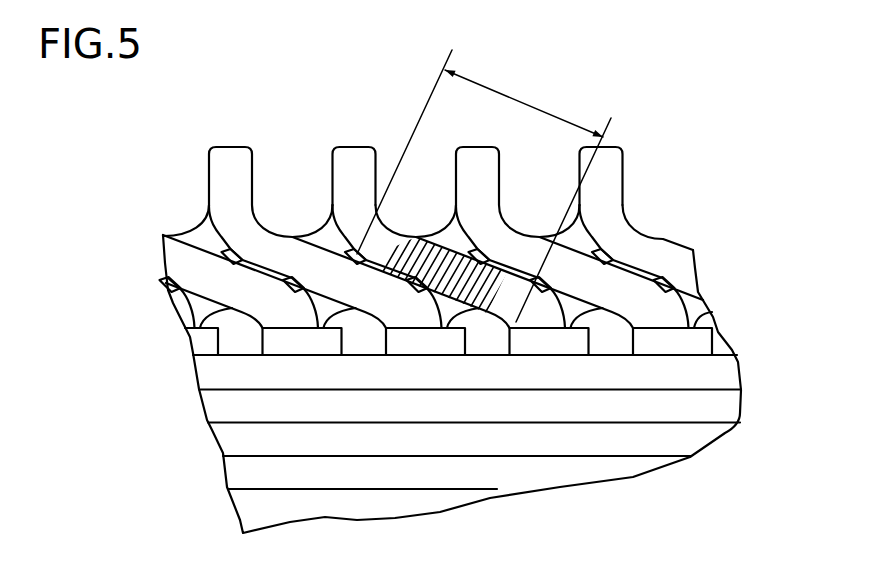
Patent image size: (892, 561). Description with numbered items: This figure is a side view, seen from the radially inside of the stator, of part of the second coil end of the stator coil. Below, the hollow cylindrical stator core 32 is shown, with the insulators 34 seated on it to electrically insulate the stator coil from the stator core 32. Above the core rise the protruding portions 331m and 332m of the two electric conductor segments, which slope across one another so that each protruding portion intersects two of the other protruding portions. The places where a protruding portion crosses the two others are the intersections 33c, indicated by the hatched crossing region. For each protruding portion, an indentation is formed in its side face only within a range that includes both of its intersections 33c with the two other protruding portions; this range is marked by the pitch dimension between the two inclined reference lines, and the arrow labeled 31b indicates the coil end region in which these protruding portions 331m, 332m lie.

The coil end portion 31b is at (643, 113).
The stator core 32 is at (220, 435).
The intersections 33c is at (403, 250).
The insulators 34 is at (290, 339).
The protruding portion 331m is at (562, 246).
The protruding portion 332m is at (202, 238).